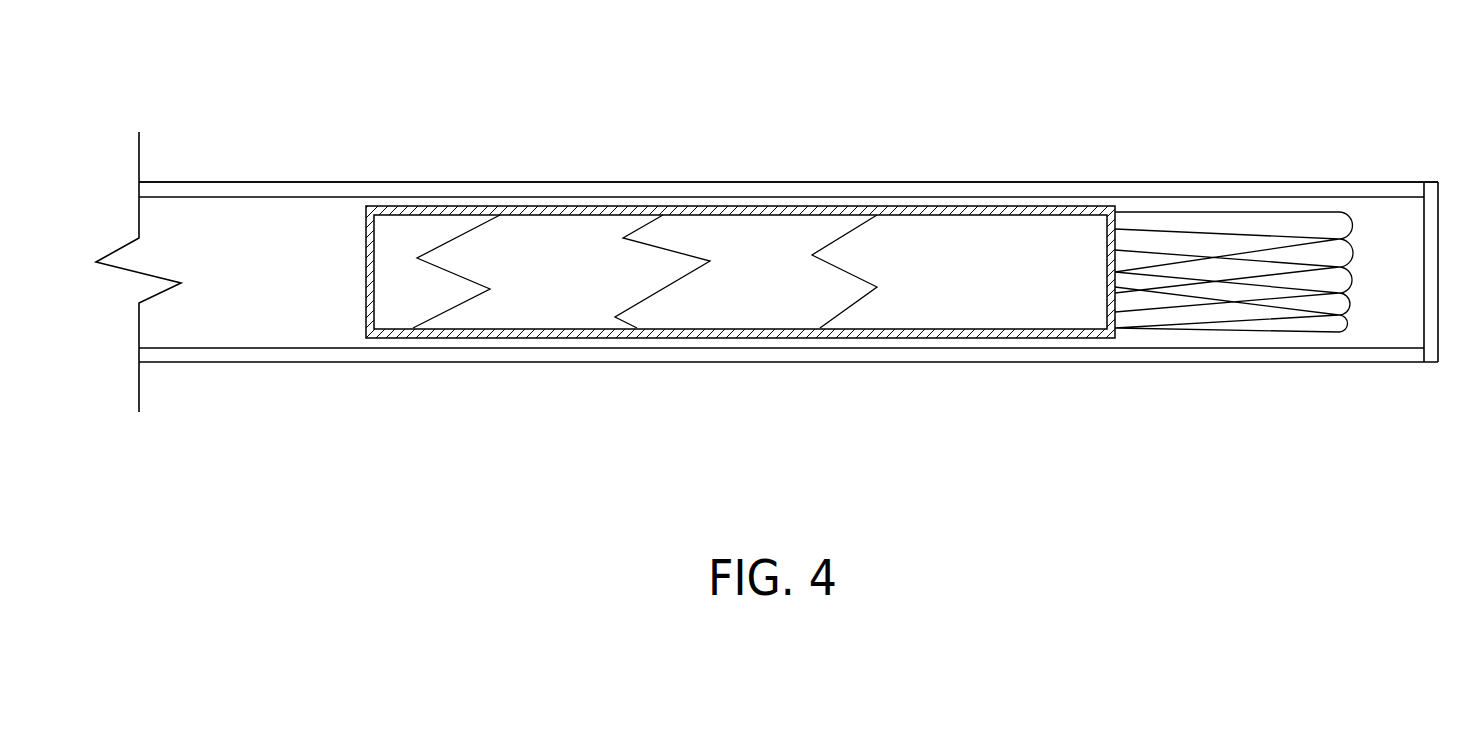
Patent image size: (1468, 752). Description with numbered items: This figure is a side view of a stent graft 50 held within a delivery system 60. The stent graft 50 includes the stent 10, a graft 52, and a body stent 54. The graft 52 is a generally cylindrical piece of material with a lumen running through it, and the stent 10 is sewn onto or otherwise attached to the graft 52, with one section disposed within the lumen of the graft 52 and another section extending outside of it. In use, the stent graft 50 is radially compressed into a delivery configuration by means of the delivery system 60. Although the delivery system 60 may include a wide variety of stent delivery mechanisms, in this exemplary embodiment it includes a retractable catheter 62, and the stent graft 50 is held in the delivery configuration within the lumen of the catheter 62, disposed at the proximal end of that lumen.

The stent 10 is at (1225, 337).
The stent graft 50 is at (789, 274).
The graft 52 is at (548, 333).
The body stent 54 is at (672, 283).
The delivery system 60 is at (308, 122).
The retractable catheter 62 is at (561, 182).